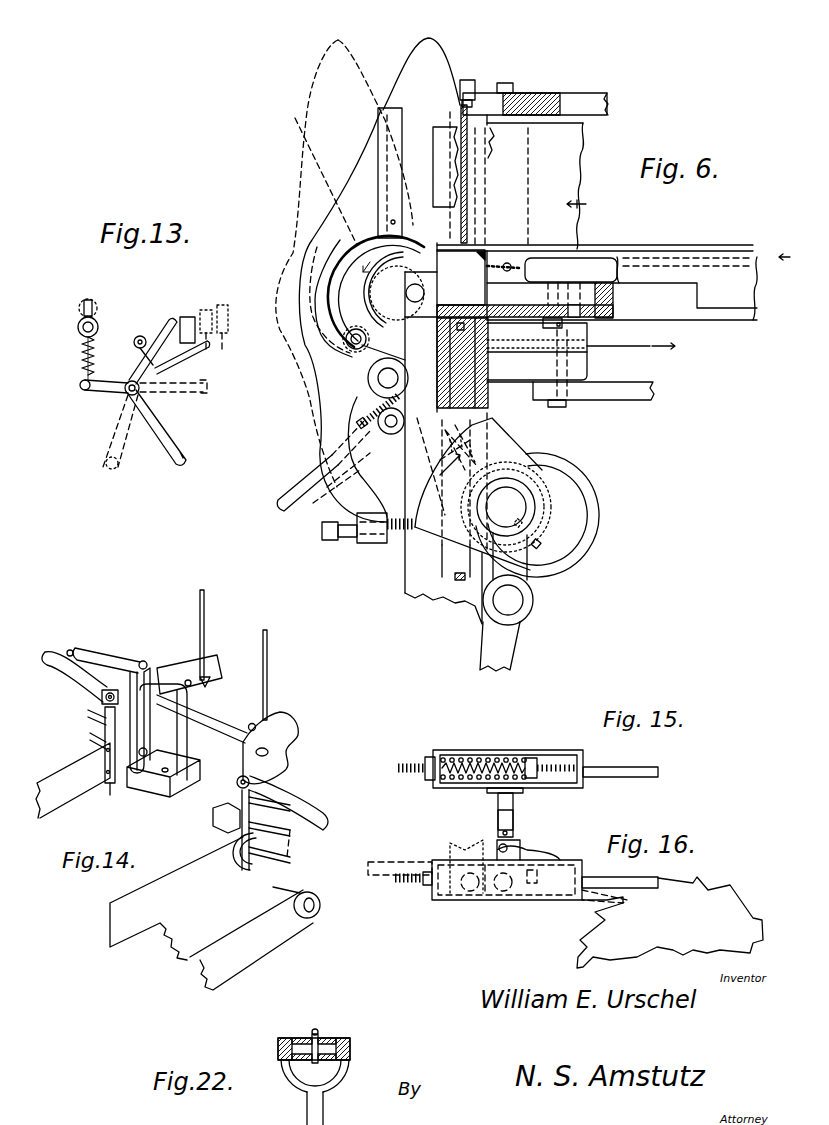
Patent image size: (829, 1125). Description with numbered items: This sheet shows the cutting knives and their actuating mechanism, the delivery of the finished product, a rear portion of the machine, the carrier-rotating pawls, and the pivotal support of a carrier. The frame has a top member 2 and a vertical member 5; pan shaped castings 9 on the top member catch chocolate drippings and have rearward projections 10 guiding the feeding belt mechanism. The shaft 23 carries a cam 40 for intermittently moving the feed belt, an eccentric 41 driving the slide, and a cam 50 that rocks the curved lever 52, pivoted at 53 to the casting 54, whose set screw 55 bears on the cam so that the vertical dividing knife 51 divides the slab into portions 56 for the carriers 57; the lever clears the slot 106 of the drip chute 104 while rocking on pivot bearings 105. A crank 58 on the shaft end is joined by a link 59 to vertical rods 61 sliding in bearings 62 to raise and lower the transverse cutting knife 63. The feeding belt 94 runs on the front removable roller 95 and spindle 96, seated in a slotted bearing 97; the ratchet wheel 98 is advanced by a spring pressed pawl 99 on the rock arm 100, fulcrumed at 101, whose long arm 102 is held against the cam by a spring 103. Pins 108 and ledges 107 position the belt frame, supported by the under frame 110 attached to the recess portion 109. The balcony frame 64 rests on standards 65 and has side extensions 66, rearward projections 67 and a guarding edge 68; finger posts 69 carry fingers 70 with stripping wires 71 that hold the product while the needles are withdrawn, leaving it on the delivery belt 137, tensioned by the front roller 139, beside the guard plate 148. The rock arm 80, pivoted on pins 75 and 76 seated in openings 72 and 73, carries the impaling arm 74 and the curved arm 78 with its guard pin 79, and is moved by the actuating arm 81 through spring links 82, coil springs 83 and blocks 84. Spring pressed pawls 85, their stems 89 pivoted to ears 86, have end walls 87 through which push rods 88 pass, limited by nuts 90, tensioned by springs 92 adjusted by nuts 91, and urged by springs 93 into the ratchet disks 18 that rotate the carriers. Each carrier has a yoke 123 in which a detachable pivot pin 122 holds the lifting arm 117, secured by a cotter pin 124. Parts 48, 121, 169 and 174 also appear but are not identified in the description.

In FIG. 6, the top member 2 is at (490, 396).
In FIG. 6, the vertical member 5 is at (417, 593).
In FIG. 6, the pan shaped castings 9 is at (603, 322).
In FIG. 6, the rearward projection 10 is at (635, 288).
In FIG. 16, the ratchet disks 18 is at (707, 895).
In FIG. 6, the shaft 23 is at (522, 500).
In FIG. 6, the cam 40 is at (583, 538).
In FIG. 6, the eccentric 41 is at (573, 525).
In FIG. 13, the arm 48 is at (173, 392).
In FIG. 6, the cam 50 is at (502, 437).
In FIG. 6, the vertical dividing knife 51 is at (405, 76).
In FIG. 6, the curved lever 52 is at (307, 253).
In FIG. 6, the pivot 53 is at (367, 380).
In FIG. 6, the casting 54 is at (489, 365).
In FIG. 6, the adjustable set screw 55 is at (342, 541).
In FIG. 6, the ice cream portions 56 is at (435, 165).
In FIG. 13, the ice cream portions 56 is at (187, 317).
In FIG. 13, the transferring carriers 57 is at (223, 353).
In FIG. 22, the transferring carriers 57 is at (318, 1107).
In FIG. 6, the crank 58 is at (537, 570).
In FIG. 6, the link 59 is at (512, 647).
In FIG. 6, the vertical rods 61 is at (487, 137).
In FIG. 6, the bearings 62 is at (483, 240).
In FIG. 6, the slab or transverse cutting knife 63 is at (465, 193).
In FIG. 6, the balcony frame 64 is at (566, 104).
In FIG. 14, the balcony frame 64 is at (237, 714).
In FIG. 6, the standards 65 is at (535, 290).
In FIG. 14, the standards 65 is at (240, 764).
In FIG. 14, the side wise extensions 66 is at (53, 666).
In FIG. 14, the rearward projections 67 is at (105, 698).
In FIG. 14, the curved guiding or guarding edge 68 is at (286, 768).
In FIG. 13, the finger posts 69 is at (140, 336).
In FIG. 14, the finger posts 69 is at (214, 823).
In FIG. 13, the fingers 70 is at (145, 354).
In FIG. 14, the fingers 70 is at (260, 868).
In FIG. 13, the stripping wires 71 is at (182, 361).
In FIG. 14, the stripping wires 71 is at (88, 735).
In FIG. 14, the openings 72 is at (150, 667).
In FIG. 14, the opening 73 is at (148, 786).
In FIG. 13, the impaling arm 74 is at (128, 433).
In FIG. 14, the impaling arm 74 is at (212, 687).
In FIG. 14, the pivot pin 75 is at (144, 748).
In FIG. 14, the pivot pin 76 is at (143, 661).
In FIG. 13, the curved arm 78 is at (159, 333).
In FIG. 14, the curved arm 78 is at (101, 655).
In FIG. 13, the guard pin 79 is at (173, 321).
In FIG. 14, the guard pin 79 is at (70, 650).
In FIG. 13, the vertical connecting member 80 is at (110, 394).
In FIG. 13, the actuating arm 81 is at (90, 391).
In FIG. 13, the spring links 82 is at (79, 307).
In FIG. 13, the coil springs 83 is at (83, 355).
In FIG. 13, the blocks 84 is at (97, 313).
In FIG. 15, the spring pressed pawls 85 is at (470, 750).
In FIG. 16, the spring pressed pawls 85 is at (448, 893).
In FIG. 16, the ears 86 is at (527, 845).
In FIG. 15, the end walls 87 is at (432, 754).
In FIG. 15, the push rods 88 is at (398, 768).
In FIG. 16, the push rods 88 is at (396, 882).
In FIG. 15, the stems 89 is at (508, 819).
In FIG. 16, the stems 89 is at (517, 821).
In FIG. 15, the nuts 90 is at (428, 778).
In FIG. 16, the nuts 90 is at (428, 887).
In FIG. 15, the nuts 91 is at (534, 758).
In FIG. 16, the nuts 91 is at (533, 892).
In FIG. 15, the springs 92 is at (497, 755).
In FIG. 16, the springs 93 is at (480, 843).
In FIG. 6, the feeding belt 94 is at (762, 257).
In FIG. 6, the front removable roller 95 is at (403, 290).
In FIG. 6, the spindle 96 is at (404, 298).
In FIG. 6, the slotted bearing 97 is at (422, 257).
In FIG. 6, the ratchet wheel 98 is at (472, 288).
In FIG. 6, the spring pressed pawl 99 is at (370, 378).
In FIG. 6, the rock arm 100 is at (357, 397).
In FIG. 6, the fulcrum 101 is at (398, 428).
In FIG. 6, the long arm 102 is at (459, 580).
In FIG. 6, the spring 103 is at (447, 466).
In FIG. 6, the drip casting or chute 104 is at (298, 481).
In FIG. 6, the pivot bearings 105 is at (403, 359).
In FIG. 6, the slot 106 is at (290, 518).
In FIG. 6, the ledges 107 is at (603, 262).
In FIG. 6, the pins 108 is at (523, 256).
In FIG. 6, the recess portion 109 is at (581, 356).
In FIG. 6, the under frame 110 is at (616, 393).
In FIG. 22, the lifting arm 117 is at (330, 1037).
In FIG. 14, the plate 121 is at (182, 665).
In FIG. 22, the detachable pivot pin 122 is at (356, 1053).
In FIG. 22, the yoke 123 is at (337, 1078).
In FIG. 22, the cotter pin 124 is at (312, 1032).
In FIG. 14, the delivery belt 137 is at (228, 931).
In FIG. 14, the front roller 139 is at (318, 920).
In FIG. 14, the guard plate 148 is at (70, 796).
In FIG. 14, the rod 169 is at (205, 596).
In FIG. 6, the bolt 174 is at (470, 85).